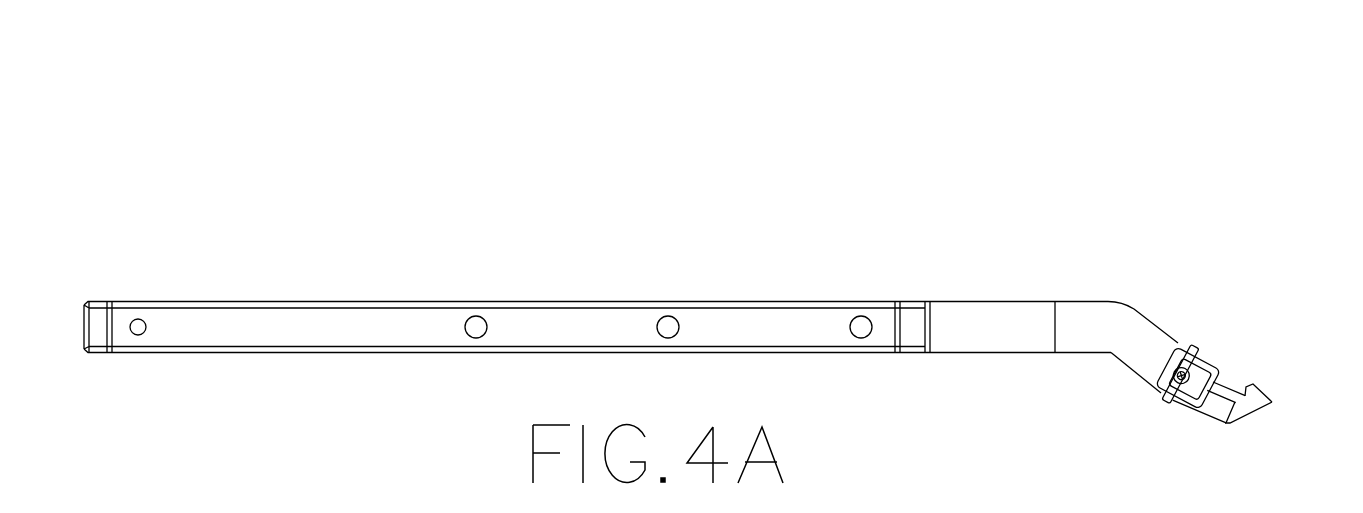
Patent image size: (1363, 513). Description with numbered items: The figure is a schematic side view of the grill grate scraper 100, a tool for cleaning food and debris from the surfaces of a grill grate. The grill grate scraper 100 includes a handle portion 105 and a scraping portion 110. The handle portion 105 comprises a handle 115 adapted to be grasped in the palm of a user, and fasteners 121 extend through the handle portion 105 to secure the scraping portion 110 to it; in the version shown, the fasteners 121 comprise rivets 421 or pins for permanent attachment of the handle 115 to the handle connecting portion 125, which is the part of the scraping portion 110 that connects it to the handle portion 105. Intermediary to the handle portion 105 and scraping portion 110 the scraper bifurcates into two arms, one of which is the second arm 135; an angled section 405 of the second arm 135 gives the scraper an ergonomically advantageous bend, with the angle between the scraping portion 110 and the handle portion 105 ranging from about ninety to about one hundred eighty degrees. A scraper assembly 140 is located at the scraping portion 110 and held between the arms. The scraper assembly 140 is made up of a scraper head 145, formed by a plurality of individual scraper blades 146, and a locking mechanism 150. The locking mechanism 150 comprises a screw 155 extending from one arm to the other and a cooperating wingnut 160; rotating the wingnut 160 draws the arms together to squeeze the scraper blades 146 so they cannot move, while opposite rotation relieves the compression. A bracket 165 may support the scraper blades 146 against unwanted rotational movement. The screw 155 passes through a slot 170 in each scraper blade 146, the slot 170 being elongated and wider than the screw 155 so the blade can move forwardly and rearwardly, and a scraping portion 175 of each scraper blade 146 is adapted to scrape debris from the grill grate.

The grill grate scraper 100 is at (894, 129).
The handle portion 105 is at (356, 206).
The handle 115 is at (238, 323).
The fasteners 121 is at (641, 157).
The rivets 421 is at (855, 319).
The handle connecting portion 125 is at (992, 218).
The second arm 135 is at (1015, 323).
The bracket 165 is at (1222, 282).
The angled section of the second arm 405 is at (1108, 355).
The scraping portion 110 is at (1187, 256).
The scraper assembly 140 is at (1254, 311).
The screw 155 is at (1185, 385).
The locking mechanism 150 is at (1153, 440).
The wingnut 160 is at (1163, 400).
The scraper head 145 is at (1274, 348).
The slot 170 is at (1230, 420).
The scraper blades 146 is at (1263, 398).
The scraping portion of the scraping blade 175 is at (1267, 433).